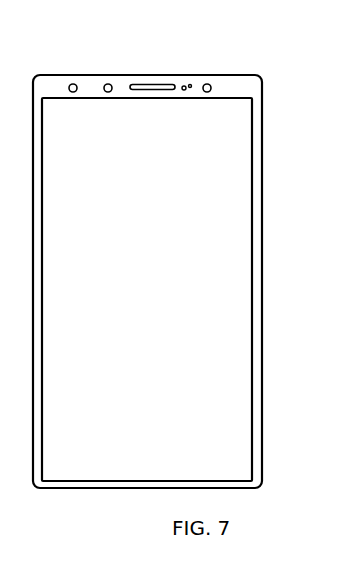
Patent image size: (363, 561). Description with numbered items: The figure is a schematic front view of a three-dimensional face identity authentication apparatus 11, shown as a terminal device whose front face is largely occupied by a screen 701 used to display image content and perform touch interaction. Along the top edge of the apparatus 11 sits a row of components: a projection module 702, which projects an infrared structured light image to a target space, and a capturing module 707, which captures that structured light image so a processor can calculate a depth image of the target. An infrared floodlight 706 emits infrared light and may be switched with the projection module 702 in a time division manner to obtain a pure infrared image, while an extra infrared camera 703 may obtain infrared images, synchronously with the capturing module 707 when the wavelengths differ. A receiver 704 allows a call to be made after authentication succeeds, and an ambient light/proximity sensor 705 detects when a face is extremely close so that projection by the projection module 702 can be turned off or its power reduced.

The apparatus 11 is at (271, 243).
The screen 701 is at (122, 272).
The projection module 702 is at (72, 92).
The infrared camera 703 is at (108, 92).
The receiver 704 is at (157, 84).
The ambient light/proximity sensor 705 is at (183, 90).
The infrared floodlight 706 is at (190, 83).
The capturing module 707 is at (207, 92).